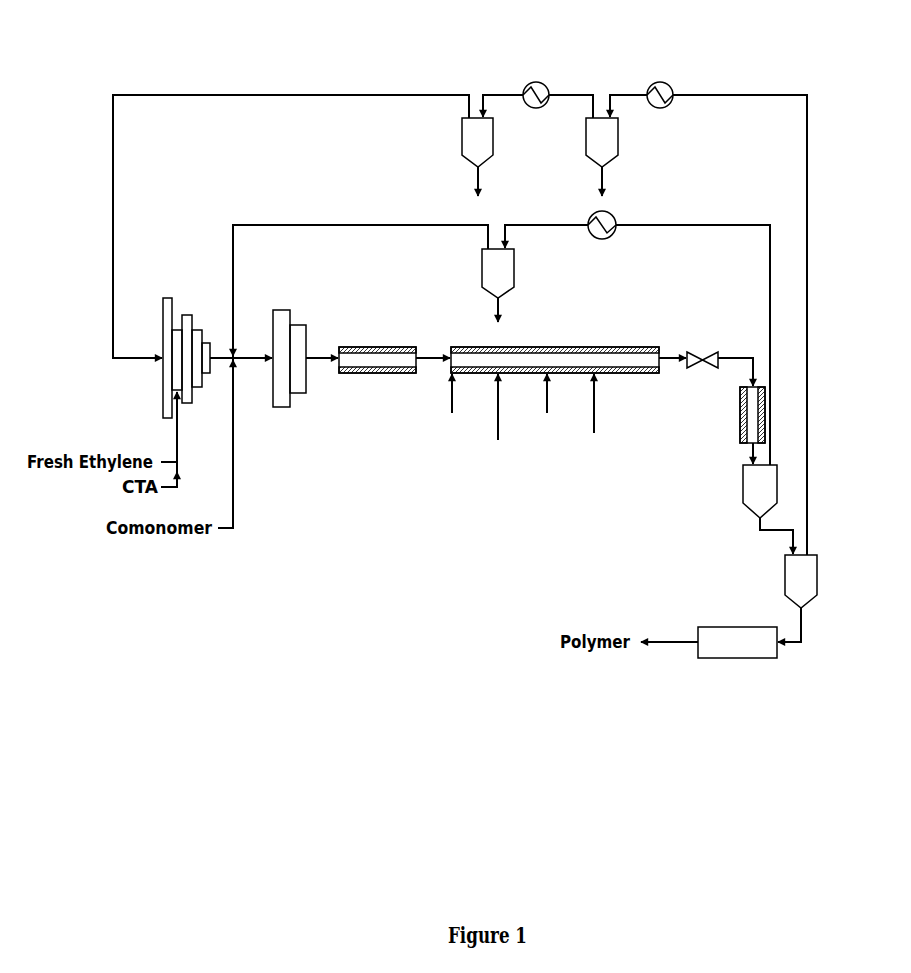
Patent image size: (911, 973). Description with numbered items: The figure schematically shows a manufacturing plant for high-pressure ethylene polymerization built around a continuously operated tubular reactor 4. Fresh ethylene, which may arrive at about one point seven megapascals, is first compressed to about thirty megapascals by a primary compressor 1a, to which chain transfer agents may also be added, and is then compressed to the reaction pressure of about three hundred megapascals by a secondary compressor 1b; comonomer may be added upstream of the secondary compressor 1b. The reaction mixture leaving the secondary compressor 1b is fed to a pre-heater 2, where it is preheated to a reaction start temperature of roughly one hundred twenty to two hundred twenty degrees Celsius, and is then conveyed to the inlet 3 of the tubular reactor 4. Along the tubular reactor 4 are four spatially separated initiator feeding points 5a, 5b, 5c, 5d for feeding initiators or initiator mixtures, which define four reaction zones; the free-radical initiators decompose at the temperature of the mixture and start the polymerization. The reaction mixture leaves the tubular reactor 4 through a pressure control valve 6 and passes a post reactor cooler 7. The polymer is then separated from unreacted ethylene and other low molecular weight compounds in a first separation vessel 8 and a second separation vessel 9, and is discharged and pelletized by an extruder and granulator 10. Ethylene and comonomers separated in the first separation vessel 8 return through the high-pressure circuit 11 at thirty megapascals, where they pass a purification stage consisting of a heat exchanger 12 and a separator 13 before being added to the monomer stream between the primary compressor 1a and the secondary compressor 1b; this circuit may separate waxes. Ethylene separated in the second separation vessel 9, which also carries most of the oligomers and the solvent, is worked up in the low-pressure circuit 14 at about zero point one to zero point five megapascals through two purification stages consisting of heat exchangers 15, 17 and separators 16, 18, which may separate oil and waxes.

The primary compressor 1a is at (178, 312).
The secondary compressor 1b is at (298, 318).
The pre-heater 2 is at (374, 347).
The inlet 3 is at (448, 366).
The tubular reactor 4 is at (641, 347).
The first initiator feeding point 5a is at (456, 374).
The second initiator feeding point 5b is at (504, 374).
The third initiator feeding point 5c is at (548, 374).
The fourth initiator feeding point 5d is at (597, 374).
The pressure control valve 6 is at (703, 350).
The post reactor cooler 7 is at (740, 407).
The first separation vessel 8 is at (757, 486).
The second separation vessel 9 is at (803, 580).
The extruder and granulator 10 is at (736, 637).
The high-pressure circuit 11 is at (556, 228).
The heat exchanger 12 is at (603, 240).
The separator 13 is at (492, 271).
The low-pressure circuit 14 is at (628, 93).
The heat exchanger 15 is at (661, 83).
The separator 16 is at (613, 142).
The heat exchanger 17 is at (537, 83).
The separator 18 is at (490, 140).